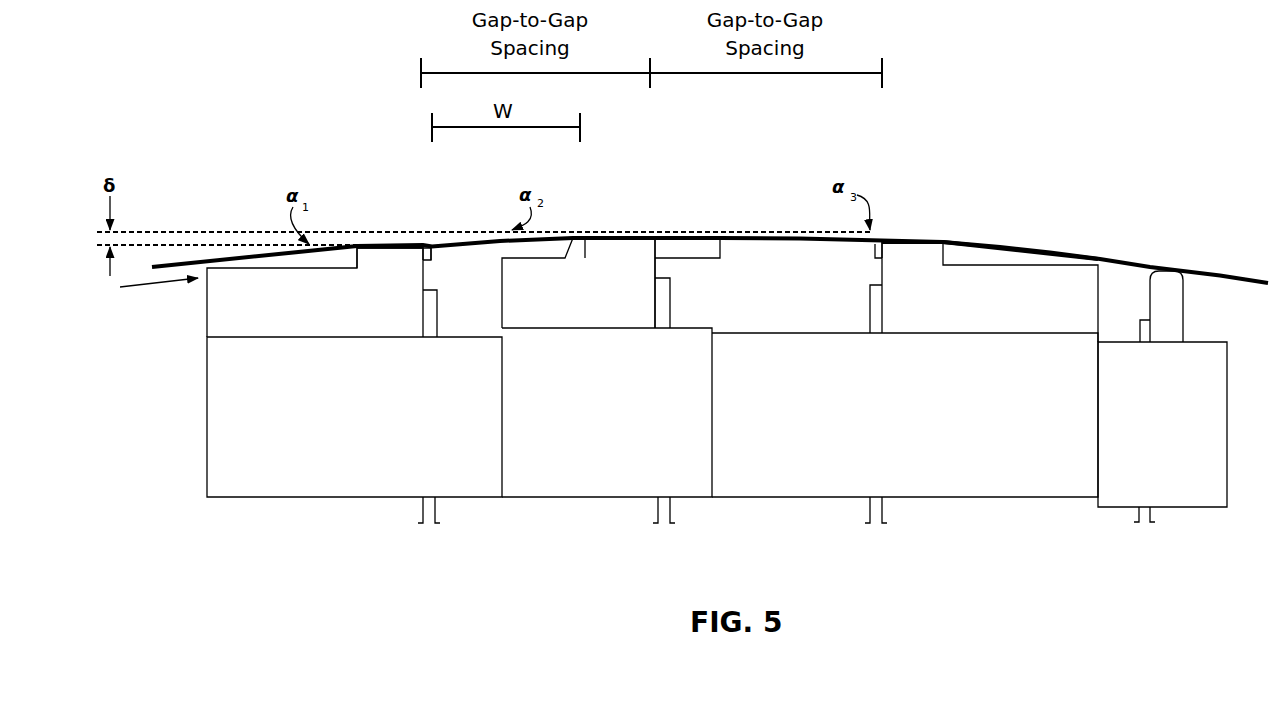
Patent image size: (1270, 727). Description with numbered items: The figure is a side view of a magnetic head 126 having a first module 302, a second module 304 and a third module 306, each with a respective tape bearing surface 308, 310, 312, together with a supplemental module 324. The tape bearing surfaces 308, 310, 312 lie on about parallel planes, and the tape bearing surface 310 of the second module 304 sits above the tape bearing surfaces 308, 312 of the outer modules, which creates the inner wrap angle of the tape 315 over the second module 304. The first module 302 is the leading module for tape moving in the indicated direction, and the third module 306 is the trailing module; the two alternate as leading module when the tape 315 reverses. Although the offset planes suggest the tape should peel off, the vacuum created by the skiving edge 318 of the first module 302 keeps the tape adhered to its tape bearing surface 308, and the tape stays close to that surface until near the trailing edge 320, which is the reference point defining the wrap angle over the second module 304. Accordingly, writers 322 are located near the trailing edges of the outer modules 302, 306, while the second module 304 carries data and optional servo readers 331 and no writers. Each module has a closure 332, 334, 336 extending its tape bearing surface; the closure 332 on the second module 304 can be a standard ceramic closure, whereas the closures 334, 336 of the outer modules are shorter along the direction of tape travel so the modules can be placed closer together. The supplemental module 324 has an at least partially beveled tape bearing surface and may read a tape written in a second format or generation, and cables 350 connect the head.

The magnetic head 126 is at (344, 133).
The first module 302 is at (207, 310).
The second module 304 is at (573, 236).
The third module 306 is at (1053, 263).
The tape bearing surface 308 is at (400, 241).
The tape bearing surface 310 is at (609, 236).
The tape bearing surface 312 is at (907, 238).
The tape 315 is at (992, 243).
The skiving edge 318 is at (351, 251).
The trailing edge 320 is at (436, 249).
The writers 322 is at (423, 241).
The supplemental module 324 is at (1184, 283).
The data and optional servo readers 331 is at (655, 236).
The closure 332 is at (695, 258).
The closure 334 is at (432, 256).
The closure 336 is at (875, 252).
The cables 350 is at (436, 508).